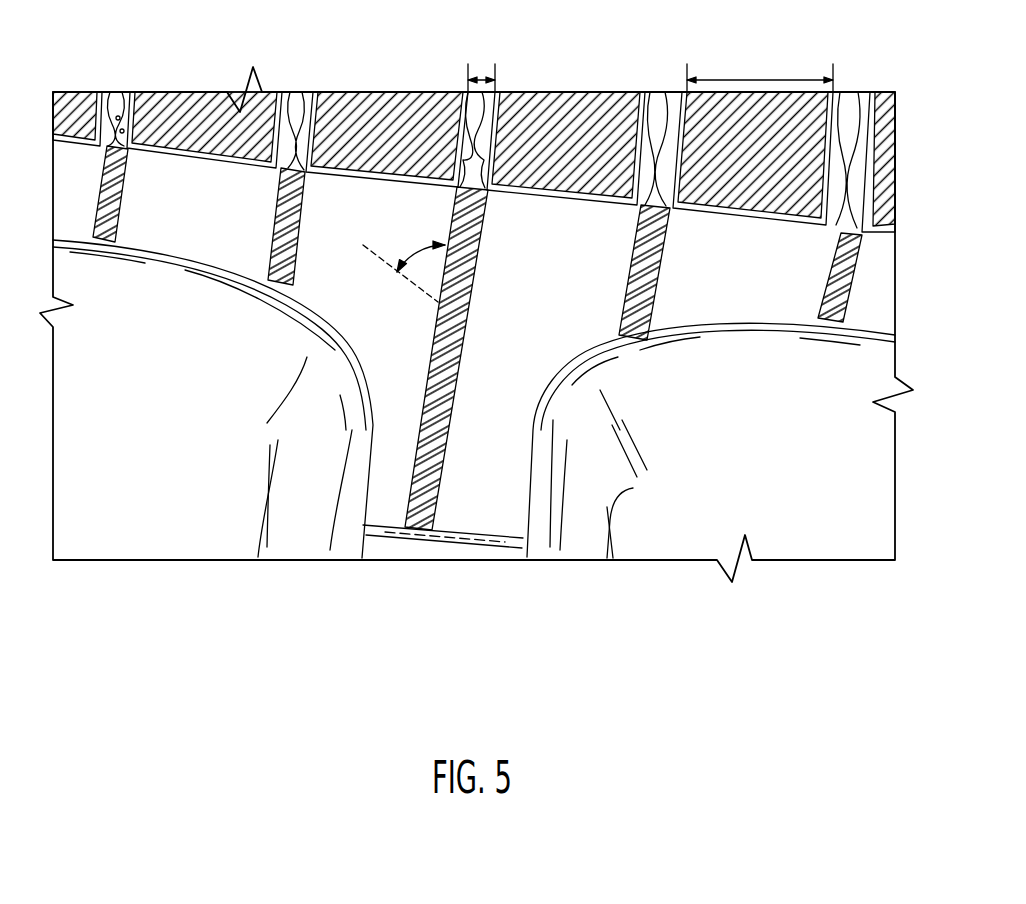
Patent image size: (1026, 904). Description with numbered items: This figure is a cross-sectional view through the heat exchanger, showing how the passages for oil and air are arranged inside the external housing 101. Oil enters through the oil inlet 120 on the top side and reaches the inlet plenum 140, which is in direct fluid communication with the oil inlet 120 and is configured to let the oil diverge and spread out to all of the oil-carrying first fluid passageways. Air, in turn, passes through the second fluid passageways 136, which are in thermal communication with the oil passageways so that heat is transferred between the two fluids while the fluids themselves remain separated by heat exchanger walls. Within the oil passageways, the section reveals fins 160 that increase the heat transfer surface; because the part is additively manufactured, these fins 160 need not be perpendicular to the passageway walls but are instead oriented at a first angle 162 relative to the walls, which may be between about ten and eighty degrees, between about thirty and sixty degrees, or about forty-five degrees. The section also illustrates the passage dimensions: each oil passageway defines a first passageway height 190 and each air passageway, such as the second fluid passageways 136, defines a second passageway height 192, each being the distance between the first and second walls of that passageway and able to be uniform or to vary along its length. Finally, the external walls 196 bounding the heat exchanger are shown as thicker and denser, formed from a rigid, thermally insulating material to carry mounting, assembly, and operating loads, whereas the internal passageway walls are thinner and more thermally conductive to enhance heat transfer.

The external housing 101 is at (142, 512).
The oil inlet 120 is at (383, 505).
The second fluid passageways 136 is at (415, 113).
The inlet plenum 140 is at (878, 305).
The fins 160 is at (477, 242).
The first angle 162 is at (418, 250).
The first passageway height 190 is at (479, 77).
The second passageway height 192 is at (755, 78).
The external walls 196 is at (798, 523).